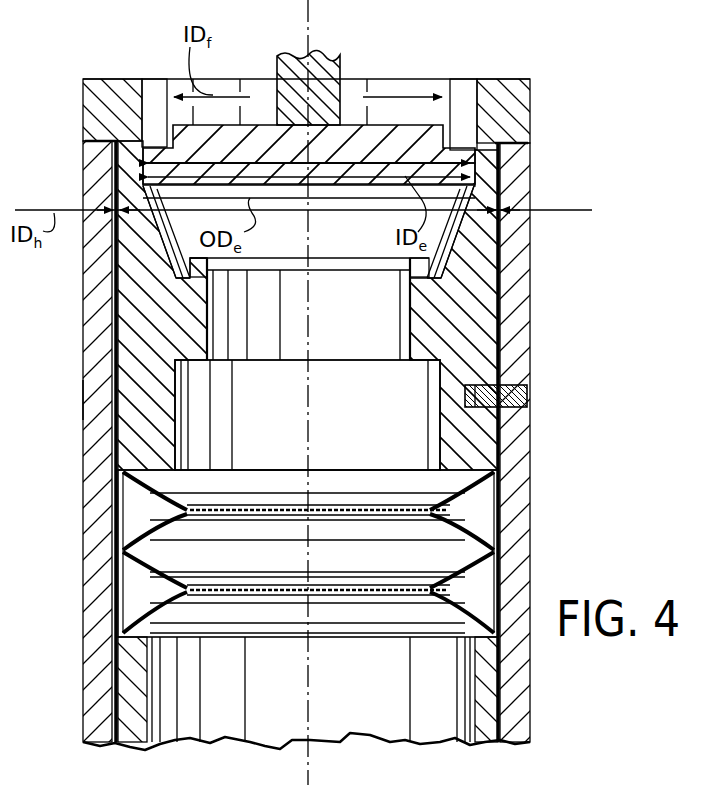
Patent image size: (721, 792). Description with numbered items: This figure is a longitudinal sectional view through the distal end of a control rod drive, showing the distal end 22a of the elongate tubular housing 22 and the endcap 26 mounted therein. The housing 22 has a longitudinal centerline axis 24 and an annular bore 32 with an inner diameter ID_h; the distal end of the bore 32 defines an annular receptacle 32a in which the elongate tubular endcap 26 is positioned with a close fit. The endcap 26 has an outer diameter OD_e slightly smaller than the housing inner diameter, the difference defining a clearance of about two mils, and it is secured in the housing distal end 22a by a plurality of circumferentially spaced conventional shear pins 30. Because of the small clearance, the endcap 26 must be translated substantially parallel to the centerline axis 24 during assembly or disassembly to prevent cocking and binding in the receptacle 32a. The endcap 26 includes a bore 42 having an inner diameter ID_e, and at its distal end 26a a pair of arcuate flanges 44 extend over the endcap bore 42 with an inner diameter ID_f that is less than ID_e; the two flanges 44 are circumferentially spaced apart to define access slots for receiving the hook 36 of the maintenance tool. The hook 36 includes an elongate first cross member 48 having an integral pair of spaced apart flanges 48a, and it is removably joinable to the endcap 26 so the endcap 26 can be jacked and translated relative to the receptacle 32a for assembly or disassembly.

The housing 22 is at (76, 598).
The distal end 22a is at (83, 400).
The longitudinal centerline axis 24 is at (304, 388).
The endcap 26 is at (537, 91).
The distal end 26a is at (83, 96).
The shear pins 30 is at (528, 395).
The annular bore 32 is at (118, 513).
The annular receptacle 32a is at (118, 306).
The hook 36 is at (347, 67).
The bore 42 is at (147, 182).
The arcuate flanges 44 is at (152, 97).
The first cross member 48 is at (402, 125).
The flanges 48a is at (505, 147).